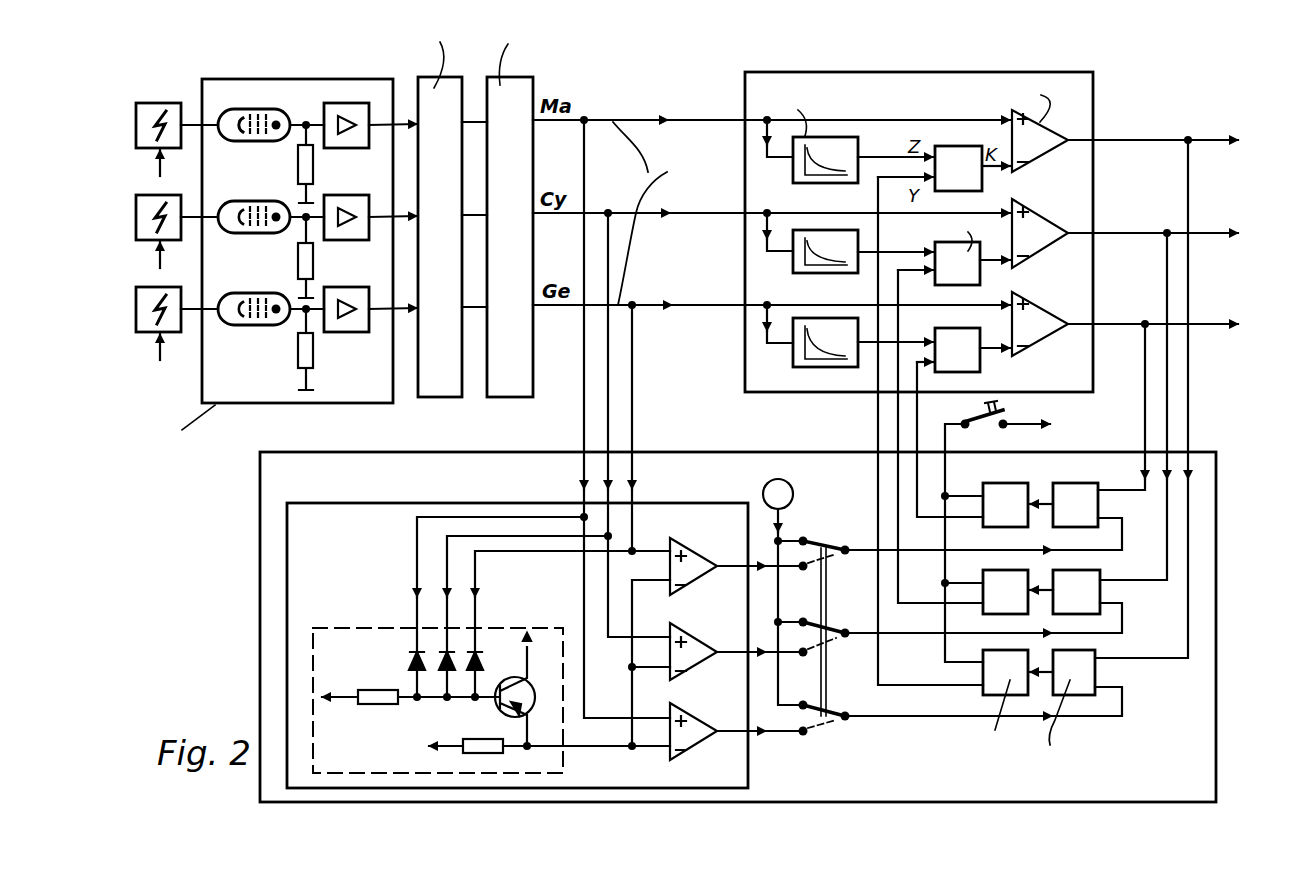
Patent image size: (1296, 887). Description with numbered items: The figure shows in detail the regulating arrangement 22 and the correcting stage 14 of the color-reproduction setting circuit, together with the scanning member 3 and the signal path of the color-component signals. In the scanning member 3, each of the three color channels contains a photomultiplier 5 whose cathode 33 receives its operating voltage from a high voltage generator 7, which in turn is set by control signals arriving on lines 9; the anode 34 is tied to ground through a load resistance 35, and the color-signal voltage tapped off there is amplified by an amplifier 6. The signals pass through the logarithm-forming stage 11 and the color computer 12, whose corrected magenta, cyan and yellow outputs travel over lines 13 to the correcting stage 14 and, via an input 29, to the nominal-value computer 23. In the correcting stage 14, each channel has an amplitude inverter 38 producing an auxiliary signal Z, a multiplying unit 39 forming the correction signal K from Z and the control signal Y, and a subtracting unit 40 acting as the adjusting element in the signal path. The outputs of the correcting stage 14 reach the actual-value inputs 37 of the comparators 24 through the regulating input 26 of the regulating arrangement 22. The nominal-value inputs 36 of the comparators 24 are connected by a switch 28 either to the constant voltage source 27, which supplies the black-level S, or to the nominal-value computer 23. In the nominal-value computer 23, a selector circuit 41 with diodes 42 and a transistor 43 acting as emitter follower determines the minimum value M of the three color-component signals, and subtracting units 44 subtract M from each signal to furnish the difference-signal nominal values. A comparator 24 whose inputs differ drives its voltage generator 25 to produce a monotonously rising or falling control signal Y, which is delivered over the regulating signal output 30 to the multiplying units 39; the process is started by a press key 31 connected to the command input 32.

The scanning member 3 is at (215, 386).
The photomultiplier 5 is at (255, 113).
The amplifier 6 is at (340, 148).
The high voltage generator 7 is at (162, 110).
The lines 9 is at (165, 152).
The logarithm-forming stage (gamma corrector) 11 is at (437, 400).
The color computer 12 is at (506, 400).
The lines 13 is at (650, 213).
The correcting stage 14 is at (1075, 113).
The regulating arrangement 22 is at (272, 493).
The nominal-value computer 23 is at (690, 522).
The comparator 24 is at (1072, 497).
The voltage generator 25 is at (1000, 497).
The control input (regulating input) 26 is at (1155, 447).
The constant voltage source 27 is at (795, 494).
The switch 28 is at (822, 722).
The input 29 is at (595, 447).
The regulating signal output 30 is at (890, 446).
The press key 31 is at (1006, 420).
The command input 32 is at (945, 452).
The cathode 33 is at (234, 118).
The anode 34 is at (283, 120).
The load resistance 35 is at (318, 352).
The nominal-value input 36 is at (1097, 680).
The actual-value input 37 is at (1097, 655).
The amplitude inverter 38 is at (845, 155).
The multiplying unit 39 is at (955, 162).
The subtracting unit 40 is at (1032, 152).
The selector circuit 41 is at (338, 650).
The diode 42 is at (410, 660).
The transistor 43 is at (497, 712).
The subtracting unit 44 is at (698, 742).